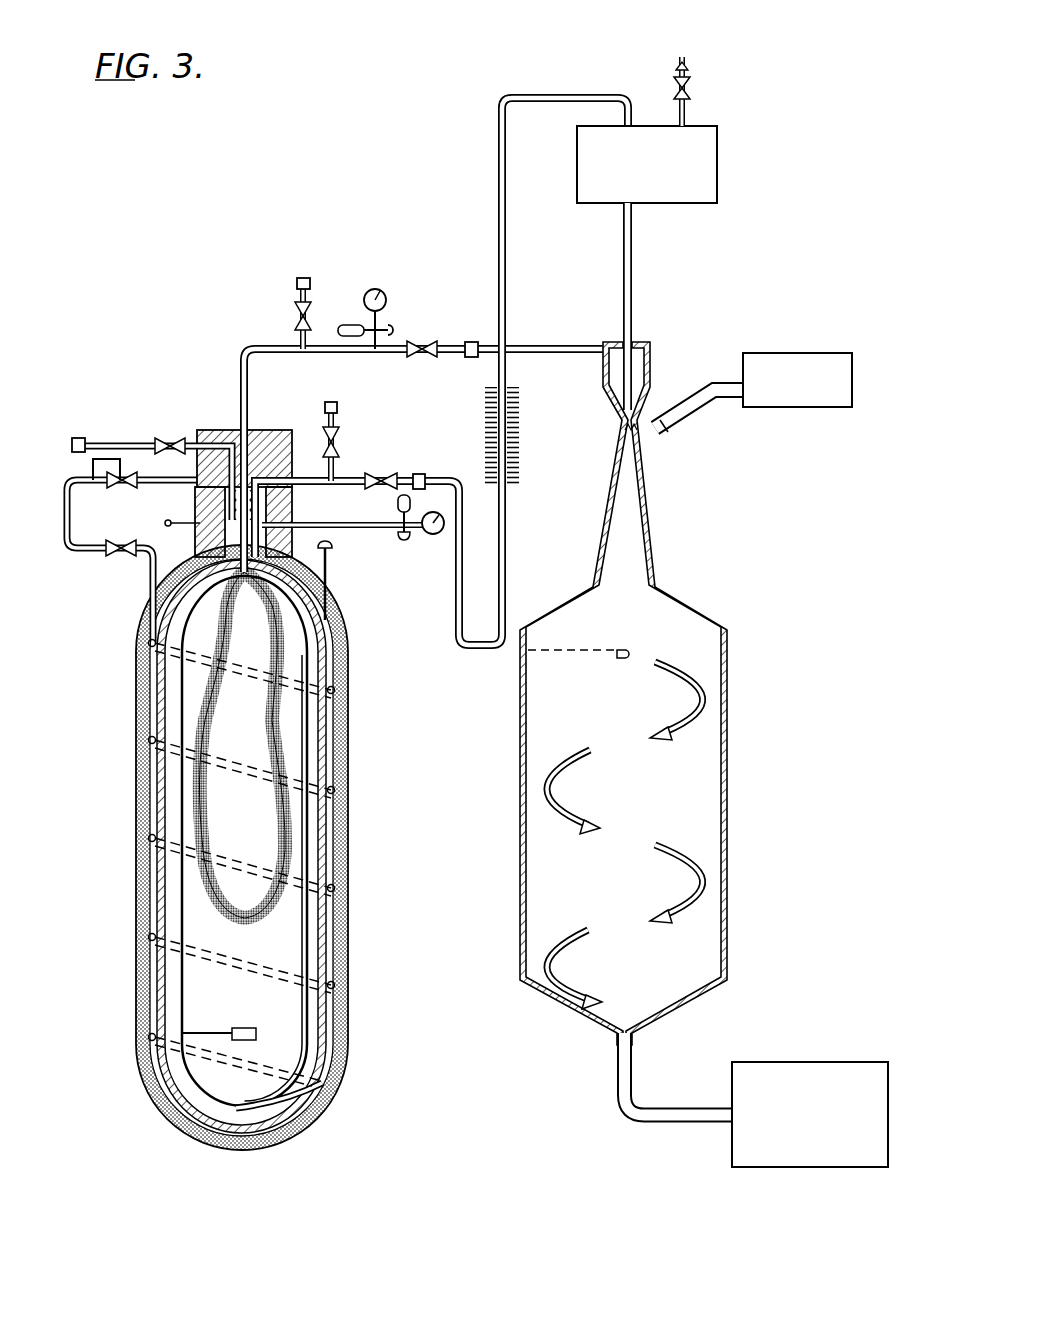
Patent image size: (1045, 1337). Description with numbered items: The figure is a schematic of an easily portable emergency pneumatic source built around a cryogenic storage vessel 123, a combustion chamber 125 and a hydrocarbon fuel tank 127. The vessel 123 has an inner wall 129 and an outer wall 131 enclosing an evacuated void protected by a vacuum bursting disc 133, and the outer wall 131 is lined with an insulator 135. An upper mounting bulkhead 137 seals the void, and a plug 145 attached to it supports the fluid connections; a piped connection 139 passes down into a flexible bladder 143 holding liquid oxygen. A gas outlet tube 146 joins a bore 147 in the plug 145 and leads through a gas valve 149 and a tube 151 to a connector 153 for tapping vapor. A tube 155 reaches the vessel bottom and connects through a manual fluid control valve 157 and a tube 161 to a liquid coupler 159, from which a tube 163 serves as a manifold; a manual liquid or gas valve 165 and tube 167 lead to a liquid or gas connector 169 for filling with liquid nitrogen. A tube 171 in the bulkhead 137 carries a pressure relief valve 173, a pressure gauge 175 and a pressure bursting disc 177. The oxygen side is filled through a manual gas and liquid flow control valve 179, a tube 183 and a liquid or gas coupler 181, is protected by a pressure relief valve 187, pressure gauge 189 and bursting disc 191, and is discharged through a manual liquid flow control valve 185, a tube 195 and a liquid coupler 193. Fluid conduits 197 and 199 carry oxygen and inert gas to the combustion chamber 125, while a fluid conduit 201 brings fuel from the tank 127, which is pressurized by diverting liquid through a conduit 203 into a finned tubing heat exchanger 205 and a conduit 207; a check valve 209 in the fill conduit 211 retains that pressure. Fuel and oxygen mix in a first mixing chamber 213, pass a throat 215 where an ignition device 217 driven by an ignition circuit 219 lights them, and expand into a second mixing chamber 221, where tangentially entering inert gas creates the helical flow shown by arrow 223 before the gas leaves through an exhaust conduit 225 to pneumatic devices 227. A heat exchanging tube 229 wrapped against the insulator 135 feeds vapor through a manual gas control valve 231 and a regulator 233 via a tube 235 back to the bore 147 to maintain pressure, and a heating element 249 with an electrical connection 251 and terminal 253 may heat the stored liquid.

The cryogenic storage vessel 123 is at (332, 624).
The combustion chamber 125 is at (666, 612).
The hydrocarbon fuel tank 127 is at (718, 168).
The inner wall 129 is at (323, 906).
The outer wall 131 is at (349, 829).
The vacuum bursting disc 133 is at (329, 544).
The insulator 135 is at (342, 850).
The upper mounting bulkhead 137 is at (300, 490).
The piped connection 139 is at (240, 372).
The flexible bladder 143 is at (248, 915).
The plug 145 is at (268, 440).
The gas outlet tube 146 is at (205, 440).
The bore 147 is at (205, 462).
The gas valve 149 is at (170, 437).
The tube 151 is at (115, 442).
The connector 153 is at (76, 437).
The tube 155 is at (305, 940).
The manual fluid control valve 157 is at (376, 474).
The liquid coupler 159 is at (426, 478).
The tube 161 is at (408, 477).
The tube 163 is at (456, 592).
The manual liquid or gas valve 165 is at (339, 442).
The tube 167 is at (337, 418).
The liquid or gas connector 169 is at (338, 404).
The tube 171 is at (355, 528).
The pressure relief valve 173 is at (397, 504).
The pressure gauge 175 is at (450, 500).
The pressure bursting disc 177 is at (406, 541).
The manual gas and liquid flow control valve 179 is at (293, 318).
The liquid or gas coupler 181 is at (296, 280).
The tube 183 is at (298, 296).
The manual liquid flow control valve 185 is at (436, 325).
The pressure relief valve 187 is at (350, 325).
The pressure gauge 189 is at (384, 293).
The bursting disc 191 is at (394, 326).
The liquid coupler 193 is at (468, 358).
The tube 195 is at (450, 346).
The fluid conduit 197 is at (568, 346).
The fluid conduit 199 is at (504, 650).
The fluid conduit 201 is at (633, 272).
The conduit 203 is at (507, 580).
The finned tubing heat exchanger 205 is at (520, 458).
The conduit 207 is at (497, 160).
The check valve 209 is at (692, 88).
The conduit 211 is at (688, 110).
The first mixing chamber 213 is at (652, 362).
The throat 215 is at (622, 417).
The ignition device 217 is at (662, 414).
The ignition circuit 219 is at (814, 353).
The second mixing chamber 221 is at (718, 661).
The arrow 223 is at (710, 865).
The exhaust conduit 225 is at (616, 1076).
The pneumatic devices 227 is at (842, 1062).
The heat exchanging tube 229 is at (150, 580).
The manual gas control valve 231 is at (121, 557).
The regulator 233 is at (126, 488).
The tube 235 is at (180, 482).
The heating element 249 is at (244, 1028).
The electrical connection 251 is at (182, 800).
The terminal 253 is at (165, 523).